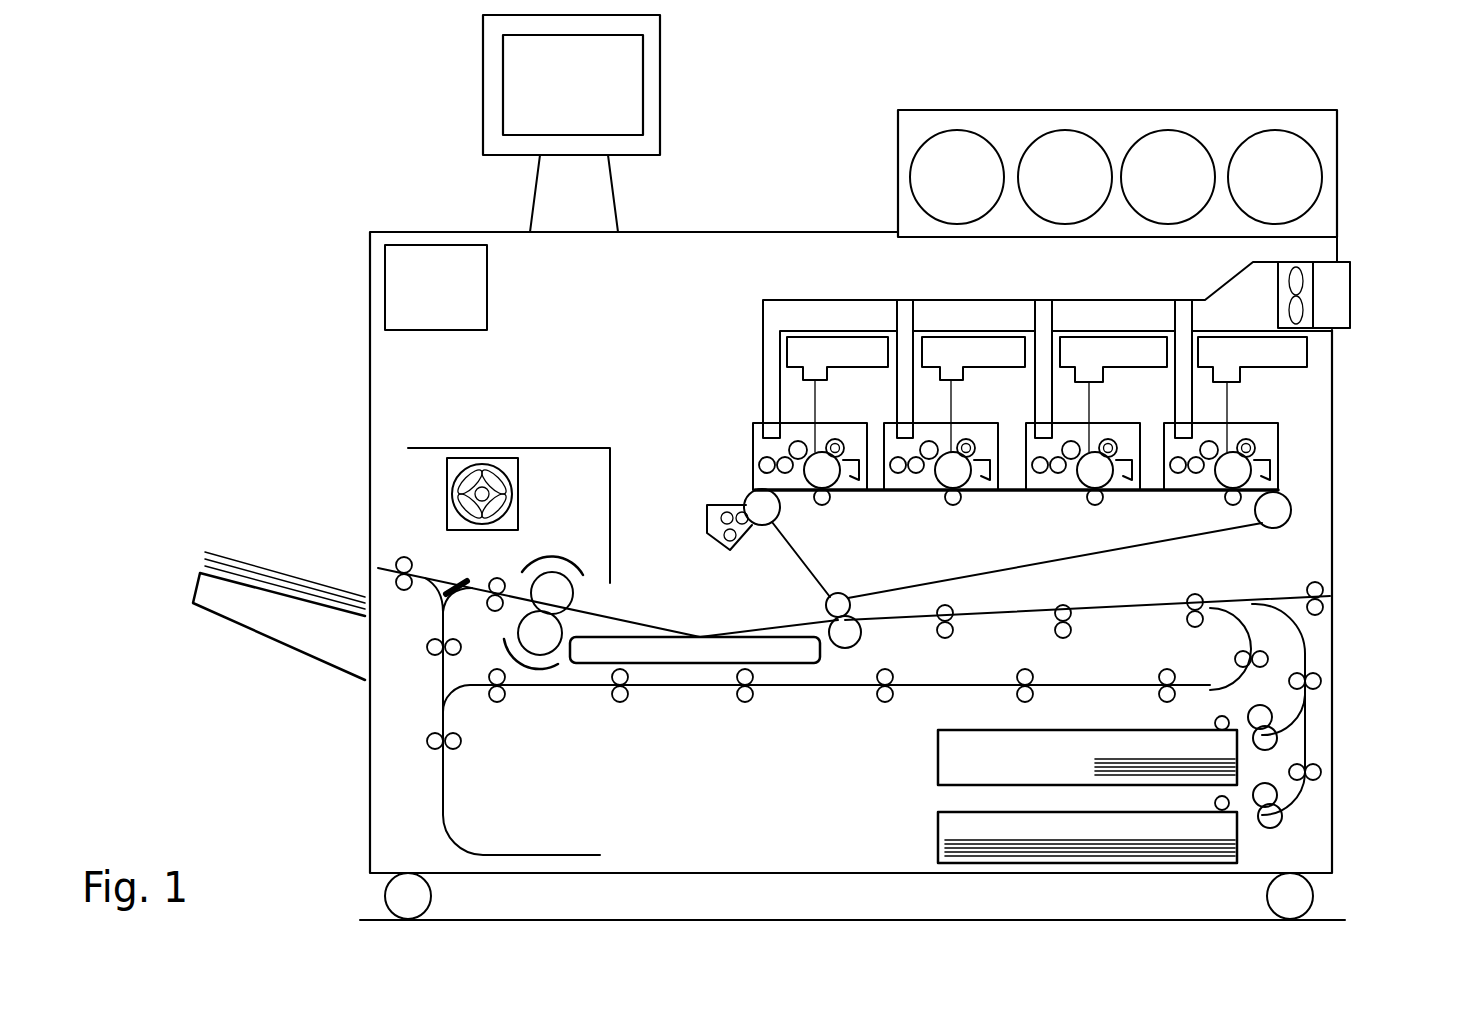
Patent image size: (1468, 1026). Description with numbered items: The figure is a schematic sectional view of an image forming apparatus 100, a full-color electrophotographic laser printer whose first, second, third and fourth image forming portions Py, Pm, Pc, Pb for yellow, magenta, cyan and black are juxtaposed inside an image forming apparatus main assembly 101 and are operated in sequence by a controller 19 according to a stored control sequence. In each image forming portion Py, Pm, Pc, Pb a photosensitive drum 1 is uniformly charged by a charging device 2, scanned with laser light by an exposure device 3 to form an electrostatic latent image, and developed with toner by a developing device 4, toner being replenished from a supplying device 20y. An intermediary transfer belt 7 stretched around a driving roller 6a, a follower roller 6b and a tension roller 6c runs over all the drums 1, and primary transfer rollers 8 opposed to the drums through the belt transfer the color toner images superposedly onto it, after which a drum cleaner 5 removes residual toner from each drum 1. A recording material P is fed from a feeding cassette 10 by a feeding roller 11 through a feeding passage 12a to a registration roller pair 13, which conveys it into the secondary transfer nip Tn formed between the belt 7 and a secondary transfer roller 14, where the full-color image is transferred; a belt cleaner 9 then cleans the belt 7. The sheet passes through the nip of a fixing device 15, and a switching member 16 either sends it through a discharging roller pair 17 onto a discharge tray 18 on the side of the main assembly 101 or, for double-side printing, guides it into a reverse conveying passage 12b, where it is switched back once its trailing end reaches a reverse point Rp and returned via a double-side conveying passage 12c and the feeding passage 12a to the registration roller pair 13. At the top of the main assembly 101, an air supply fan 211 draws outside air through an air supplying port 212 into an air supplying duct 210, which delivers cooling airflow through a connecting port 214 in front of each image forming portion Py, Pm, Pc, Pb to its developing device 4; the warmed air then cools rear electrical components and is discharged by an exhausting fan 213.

The image forming apparatus 100 is at (345, 270).
The image forming apparatus main assembly 101 is at (1336, 652).
The controller 19 is at (436, 287).
The supplying device 20y is at (948, 172).
The air supplying duct 210 is at (823, 312).
The air supply fan 211 is at (1312, 262).
The air supplying port 212 is at (1352, 292).
The exhausting fan 213 is at (480, 470).
The connecting port 214 is at (769, 430).
The first image forming portion Py is at (748, 425).
The second image forming portion Pm is at (893, 425).
The third image forming portion Pc is at (1033, 425).
The fourth image forming portion Pb is at (1172, 425).
The photosensitive drum 1 is at (1027, 470).
The charging device 2 is at (838, 440).
The exposure device 3 is at (1047, 394).
The developing device 4 is at (787, 478).
The drum cleaner 5 is at (848, 492).
The driving roller 6a is at (1277, 515).
The follower roller 6b is at (842, 600).
The tension roller 6c is at (756, 500).
The intermediary transfer belt 7 is at (1231, 534).
The primary transfer roller 8 is at (823, 507).
The belt cleaner 9 is at (712, 508).
The secondary transfer nip Tn is at (812, 594).
The feeding cassette 10 is at (937, 772).
The recording material P is at (1097, 767).
The feeding roller 11 is at (1215, 725).
The feeding passage 12a is at (1160, 612).
The reverse conveying passage 12b is at (442, 690).
The double-side conveying passage 12c is at (585, 690).
The registration roller pair 13 is at (956, 632).
The secondary transfer roller 14 is at (860, 642).
The fixing device 15 is at (573, 616).
The switching member 16 is at (452, 582).
The discharging roller pair 17 is at (402, 560).
The discharge tray 18 is at (292, 632).
The reverse point Rp is at (600, 857).